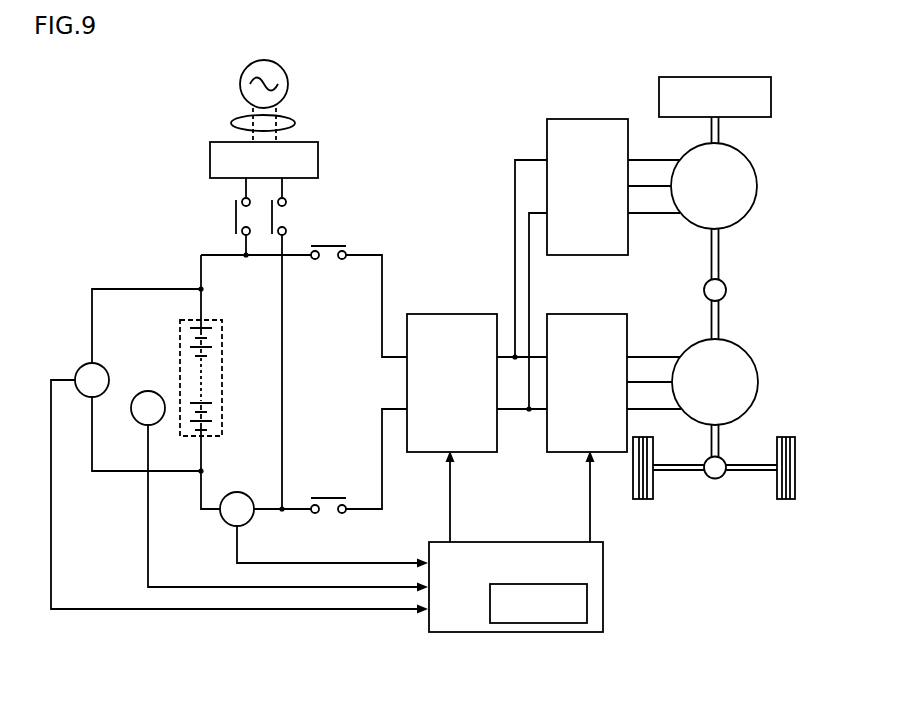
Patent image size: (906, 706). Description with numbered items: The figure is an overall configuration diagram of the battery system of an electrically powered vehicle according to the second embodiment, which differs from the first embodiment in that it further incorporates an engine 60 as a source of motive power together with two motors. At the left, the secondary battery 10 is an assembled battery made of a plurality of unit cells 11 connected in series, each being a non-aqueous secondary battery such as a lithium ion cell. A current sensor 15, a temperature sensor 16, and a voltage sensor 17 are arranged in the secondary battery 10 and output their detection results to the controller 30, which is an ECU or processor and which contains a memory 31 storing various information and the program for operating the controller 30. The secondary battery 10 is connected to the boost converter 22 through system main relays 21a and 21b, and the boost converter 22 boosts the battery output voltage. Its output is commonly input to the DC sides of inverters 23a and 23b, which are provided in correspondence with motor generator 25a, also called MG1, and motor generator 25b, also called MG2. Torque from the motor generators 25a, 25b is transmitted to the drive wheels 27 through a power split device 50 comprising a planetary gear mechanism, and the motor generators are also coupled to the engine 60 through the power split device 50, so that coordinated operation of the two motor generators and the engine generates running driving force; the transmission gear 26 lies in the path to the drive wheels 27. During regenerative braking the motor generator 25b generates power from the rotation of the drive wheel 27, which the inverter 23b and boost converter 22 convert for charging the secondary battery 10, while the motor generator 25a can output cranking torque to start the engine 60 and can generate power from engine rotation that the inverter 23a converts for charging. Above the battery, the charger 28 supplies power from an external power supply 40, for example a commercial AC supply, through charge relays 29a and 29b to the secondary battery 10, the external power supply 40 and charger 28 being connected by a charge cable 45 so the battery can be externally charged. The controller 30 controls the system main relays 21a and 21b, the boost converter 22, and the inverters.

The secondary battery 10 is at (222, 379).
The unit cell 11 is at (208, 338).
The current sensor 15 is at (237, 492).
The temperature sensor 16 is at (149, 391).
The voltage sensor 17 is at (86, 366).
The system main relay 21a is at (329, 248).
The system main relay 21b is at (329, 501).
The boost converter 22 is at (428, 314).
The inverter 23a is at (584, 119).
The inverter 23b is at (584, 314).
The motor generator 25a is at (757, 186).
The motor generator 25b is at (758, 382).
The transmission gear 26 is at (716, 479).
The drive wheel 27 is at (787, 500).
The charger 28 is at (318, 159).
The charge relay 29a is at (232, 212).
The charge relay 29b is at (277, 214).
The controller 30 is at (483, 632).
The memory 31 is at (587, 603).
The external power supply 40 is at (288, 84).
The charge cable 45 is at (295, 123).
The power split device 50 is at (726, 290).
The engine 60 is at (737, 77).